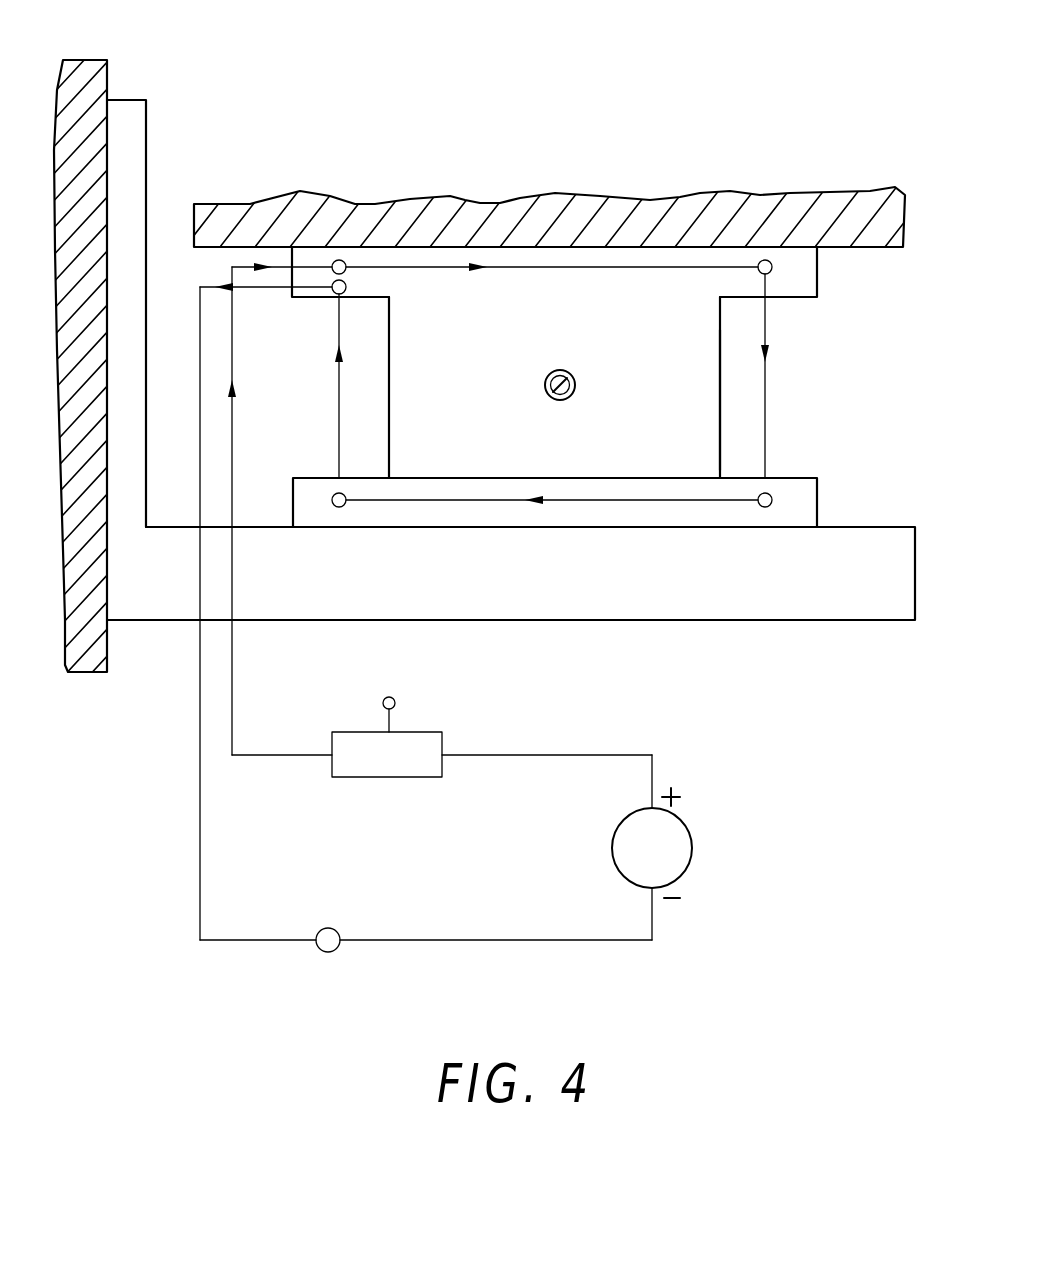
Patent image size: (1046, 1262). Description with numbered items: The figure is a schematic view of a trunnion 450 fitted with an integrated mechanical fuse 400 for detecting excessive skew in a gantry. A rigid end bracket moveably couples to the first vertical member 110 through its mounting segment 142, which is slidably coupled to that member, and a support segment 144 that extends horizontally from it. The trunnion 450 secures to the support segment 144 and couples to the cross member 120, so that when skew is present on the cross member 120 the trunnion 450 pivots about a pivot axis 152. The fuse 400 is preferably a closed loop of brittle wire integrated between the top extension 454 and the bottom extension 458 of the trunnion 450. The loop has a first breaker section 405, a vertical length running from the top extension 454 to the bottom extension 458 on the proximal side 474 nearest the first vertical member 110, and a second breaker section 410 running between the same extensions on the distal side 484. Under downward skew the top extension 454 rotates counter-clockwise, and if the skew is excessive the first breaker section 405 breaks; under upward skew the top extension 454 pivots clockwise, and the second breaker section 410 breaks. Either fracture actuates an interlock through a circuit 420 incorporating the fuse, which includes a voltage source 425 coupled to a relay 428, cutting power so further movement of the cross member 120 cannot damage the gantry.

The first vertical member 110 is at (124, 375).
The mounting segment 142 is at (171, 313).
The support segment 144 is at (511, 598).
The cross member 120 is at (543, 188).
The mechanical fuse 400 is at (597, 387).
The top extension 454 is at (603, 272).
The proximal side 474 is at (429, 387).
The trunnion 450 is at (800, 387).
The distal side 484 is at (672, 400).
The second breaker section 410 is at (818, 376).
The bottom extension 458 is at (602, 497).
The first breaker section 405 is at (300, 386).
The pivot axis 152 is at (598, 368).
The circuit 420 is at (494, 607).
The relay 428 is at (442, 730).
The voltage source 425 is at (691, 847).